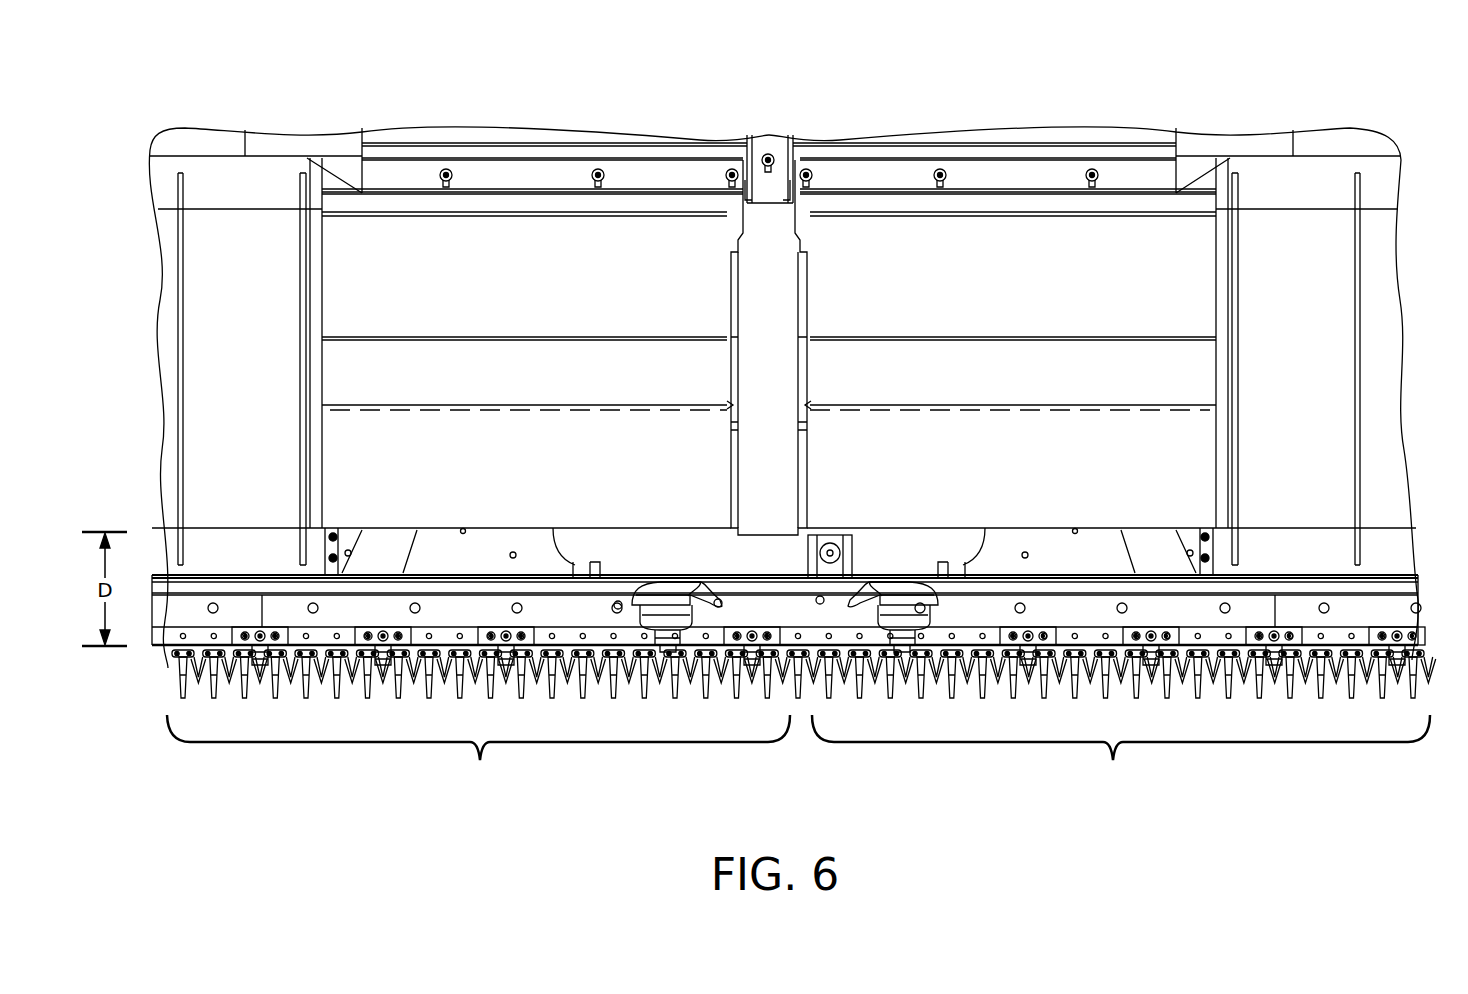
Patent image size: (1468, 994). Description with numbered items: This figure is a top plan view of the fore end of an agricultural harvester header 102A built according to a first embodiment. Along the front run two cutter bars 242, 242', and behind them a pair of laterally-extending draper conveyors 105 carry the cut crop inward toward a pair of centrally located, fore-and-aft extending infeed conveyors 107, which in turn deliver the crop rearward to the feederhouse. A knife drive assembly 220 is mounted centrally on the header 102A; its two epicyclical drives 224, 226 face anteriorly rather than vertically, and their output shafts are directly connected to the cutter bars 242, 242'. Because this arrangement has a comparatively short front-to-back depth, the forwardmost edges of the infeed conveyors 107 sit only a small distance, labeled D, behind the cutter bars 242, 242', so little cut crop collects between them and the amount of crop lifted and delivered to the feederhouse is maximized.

The header 102A is at (1348, 114).
The draper conveyor 105 is at (220, 384).
The infeed conveyor 107 is at (507, 292).
The knife drive assembly 220 is at (701, 571).
The epicyclical drive 224 is at (669, 580).
The epicyclical drive 226 is at (907, 580).
The cutter bar 242 is at (478, 710).
The cutter bar 242' is at (1111, 710).